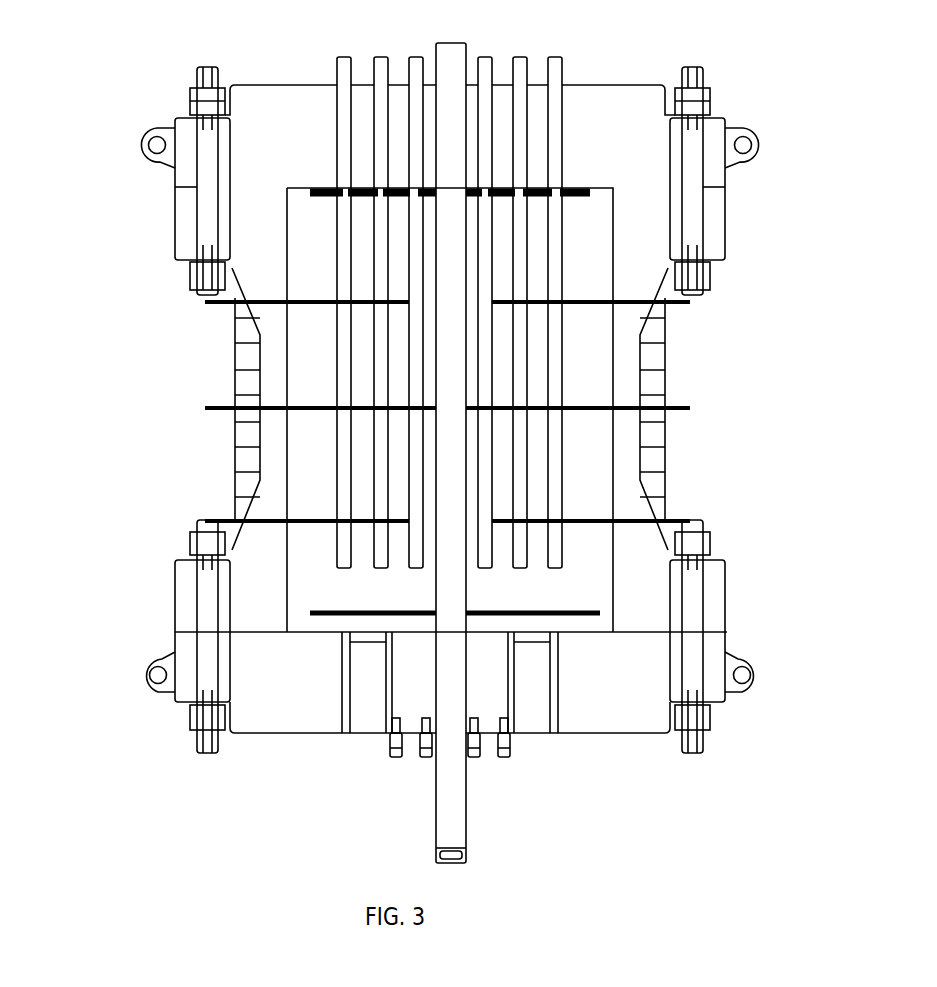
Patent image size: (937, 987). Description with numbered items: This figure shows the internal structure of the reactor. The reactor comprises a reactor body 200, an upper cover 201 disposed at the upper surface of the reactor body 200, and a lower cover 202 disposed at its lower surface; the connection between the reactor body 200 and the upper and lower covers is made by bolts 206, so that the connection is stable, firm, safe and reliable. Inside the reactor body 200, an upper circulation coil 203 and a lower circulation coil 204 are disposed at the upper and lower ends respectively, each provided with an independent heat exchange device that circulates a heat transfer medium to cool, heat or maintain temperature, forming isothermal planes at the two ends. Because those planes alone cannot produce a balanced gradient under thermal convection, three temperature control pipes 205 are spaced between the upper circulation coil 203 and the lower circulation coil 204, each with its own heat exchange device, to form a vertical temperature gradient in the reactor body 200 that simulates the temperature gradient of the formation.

The reactor body 200 is at (267, 265).
The upper cover 201 is at (185, 162).
The lower cover 202 is at (192, 668).
The upper circulation coil 203 is at (598, 203).
The lower circulation coil 204 is at (587, 613).
The temperature control pipes 205 is at (203, 302).
The bolts 206 is at (688, 148).